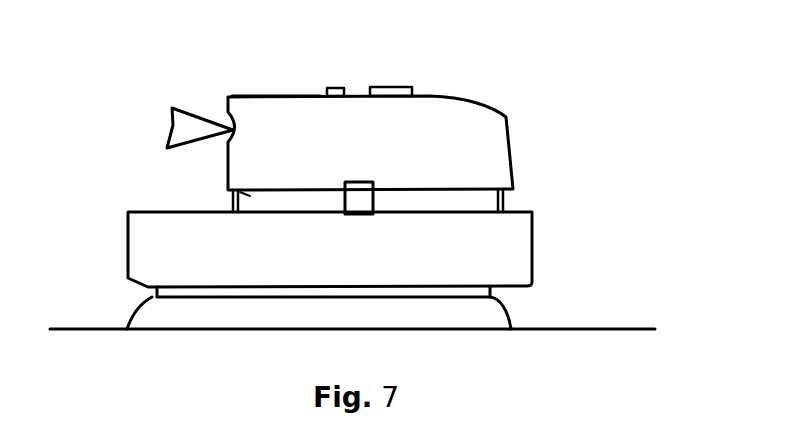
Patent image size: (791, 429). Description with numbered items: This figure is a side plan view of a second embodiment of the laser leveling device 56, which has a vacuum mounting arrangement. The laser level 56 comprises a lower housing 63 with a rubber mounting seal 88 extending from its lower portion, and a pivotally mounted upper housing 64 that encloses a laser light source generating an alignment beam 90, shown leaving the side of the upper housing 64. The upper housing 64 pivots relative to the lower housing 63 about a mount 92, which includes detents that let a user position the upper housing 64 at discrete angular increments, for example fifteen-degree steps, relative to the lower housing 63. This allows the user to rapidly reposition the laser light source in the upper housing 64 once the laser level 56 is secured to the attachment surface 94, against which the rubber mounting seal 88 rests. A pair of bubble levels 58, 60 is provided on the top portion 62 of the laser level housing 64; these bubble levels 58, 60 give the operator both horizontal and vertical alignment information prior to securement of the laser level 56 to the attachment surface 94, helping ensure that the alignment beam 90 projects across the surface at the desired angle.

The laser leveling device 56 is at (575, 70).
The bubble level 58 is at (392, 87).
The bubble level 60 is at (333, 88).
The top portion 62 is at (281, 96).
The lower housing 63 is at (515, 250).
The upper housing 64 is at (500, 131).
The rubber mounting seal 88 is at (175, 311).
The alignment beam 90 is at (168, 123).
The mount 92 is at (360, 198).
The attachment surface 94 is at (612, 330).